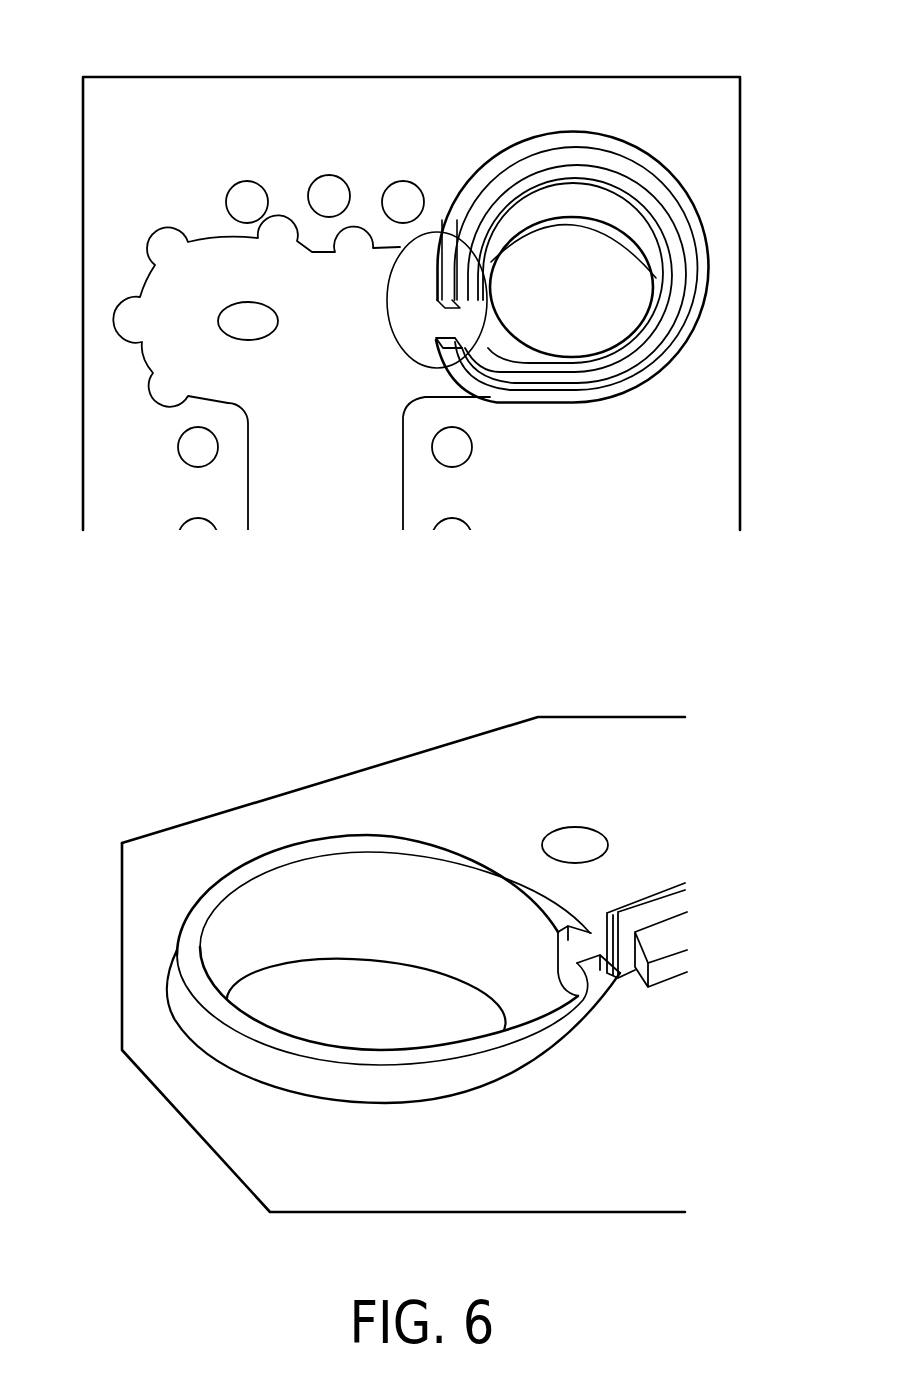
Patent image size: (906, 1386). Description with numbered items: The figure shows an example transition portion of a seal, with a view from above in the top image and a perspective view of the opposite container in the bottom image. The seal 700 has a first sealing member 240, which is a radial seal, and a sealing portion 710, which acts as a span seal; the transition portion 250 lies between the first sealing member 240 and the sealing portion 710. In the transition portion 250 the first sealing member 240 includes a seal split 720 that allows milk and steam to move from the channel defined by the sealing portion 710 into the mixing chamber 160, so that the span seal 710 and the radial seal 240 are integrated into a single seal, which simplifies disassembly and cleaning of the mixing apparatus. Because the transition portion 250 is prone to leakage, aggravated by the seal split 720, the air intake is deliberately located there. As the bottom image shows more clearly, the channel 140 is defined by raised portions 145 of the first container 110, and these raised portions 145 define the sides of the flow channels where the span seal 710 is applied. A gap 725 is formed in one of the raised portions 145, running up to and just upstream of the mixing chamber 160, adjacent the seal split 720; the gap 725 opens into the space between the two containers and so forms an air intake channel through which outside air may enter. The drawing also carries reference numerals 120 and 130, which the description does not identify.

The first container 110 is at (355, 966).
The substrate plate 120 is at (561, 77).
The coil assembly 130 is at (703, 143).
The channel 140 is at (658, 885).
The raised portions 145 is at (663, 937).
The mixing chamber 160 is at (347, 1022).
The first sealing member 240 is at (707, 300).
The transition portion 250 is at (435, 232).
The seal 700 is at (123, 280).
The sealing portion 710 is at (268, 506).
The seal split 720 is at (445, 322).
The gap 725 is at (590, 940).